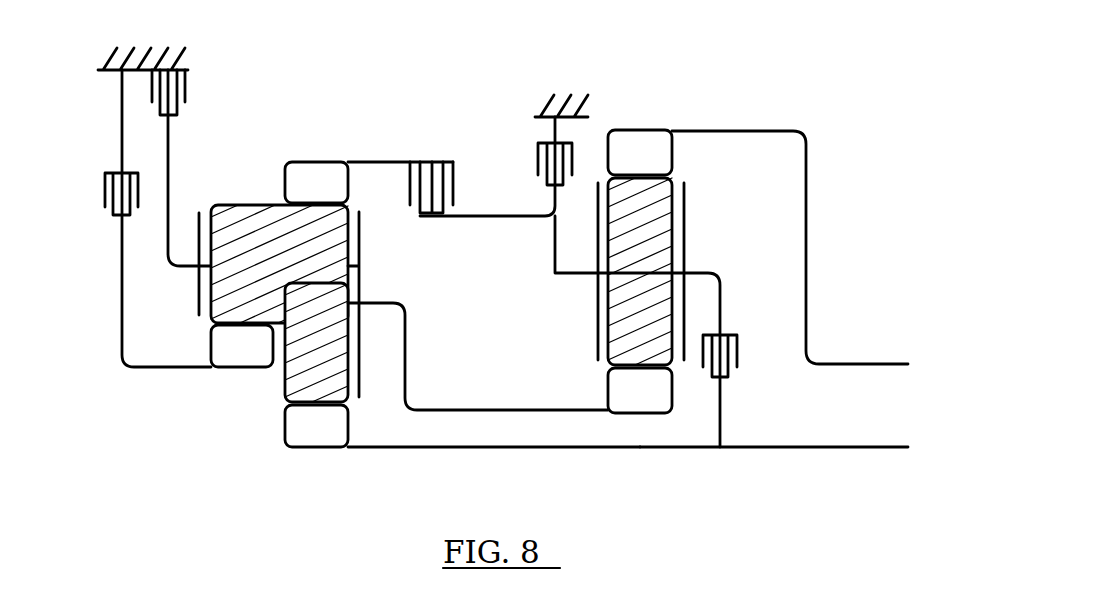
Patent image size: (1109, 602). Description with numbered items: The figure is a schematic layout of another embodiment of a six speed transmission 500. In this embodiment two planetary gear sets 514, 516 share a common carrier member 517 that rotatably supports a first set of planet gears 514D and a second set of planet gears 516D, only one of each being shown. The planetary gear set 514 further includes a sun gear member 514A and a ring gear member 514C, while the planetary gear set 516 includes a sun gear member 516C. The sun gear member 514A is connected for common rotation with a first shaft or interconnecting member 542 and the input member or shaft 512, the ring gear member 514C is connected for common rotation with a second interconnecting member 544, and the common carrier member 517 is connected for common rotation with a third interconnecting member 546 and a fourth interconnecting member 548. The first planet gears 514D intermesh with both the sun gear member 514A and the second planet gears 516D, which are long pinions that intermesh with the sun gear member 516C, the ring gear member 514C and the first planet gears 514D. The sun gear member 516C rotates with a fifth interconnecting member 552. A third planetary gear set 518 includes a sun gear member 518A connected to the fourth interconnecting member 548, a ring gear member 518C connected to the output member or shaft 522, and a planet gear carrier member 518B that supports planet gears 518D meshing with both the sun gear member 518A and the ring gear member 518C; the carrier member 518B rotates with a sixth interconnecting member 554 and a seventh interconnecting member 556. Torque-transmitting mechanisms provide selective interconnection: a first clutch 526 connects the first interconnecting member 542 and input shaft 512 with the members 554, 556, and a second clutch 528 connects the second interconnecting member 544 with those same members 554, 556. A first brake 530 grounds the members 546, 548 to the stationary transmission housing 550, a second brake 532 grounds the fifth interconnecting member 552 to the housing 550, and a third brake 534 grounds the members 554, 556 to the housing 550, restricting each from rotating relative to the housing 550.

The six speed transmission 500 is at (747, 94).
The input member or shaft 512 is at (850, 449).
The planetary gear set 514 is at (302, 466).
The sun gear member 514A is at (345, 440).
The ring gear member 514C is at (345, 196).
The first set of planet gears 514D is at (345, 360).
The planetary gear set 516 is at (236, 380).
The sun gear member 516C is at (270, 360).
The second set of planet gears 516D is at (326, 267).
The common carrier member 517 is at (198, 297).
The planetary gear set 518 is at (643, 118).
The sun gear member 518A is at (669, 404).
The planet gear carrier member 518B is at (686, 194).
The ring gear member 518C is at (669, 166).
The planet gears 518D is at (669, 284).
The output member or shaft 522 is at (807, 243).
The first clutch 526 is at (737, 358).
The second clutch 528 is at (455, 180).
The first brake 530 is at (188, 92).
The second brake 532 is at (103, 187).
The third brake 534 is at (538, 156).
The first shaft or interconnecting member 542 is at (474, 449).
The second shaft or interconnecting member 544 is at (383, 160).
The third shaft or interconnecting member 546 is at (167, 150).
The fourth shaft or interconnecting member 548 is at (382, 302).
The transmission housing 550 is at (203, 56).
The fifth shaft or interconnecting member 552 is at (115, 333).
The sixth shaft or interconnecting member 554 is at (722, 297).
The seventh shaft or interconnecting member 556 is at (493, 218).